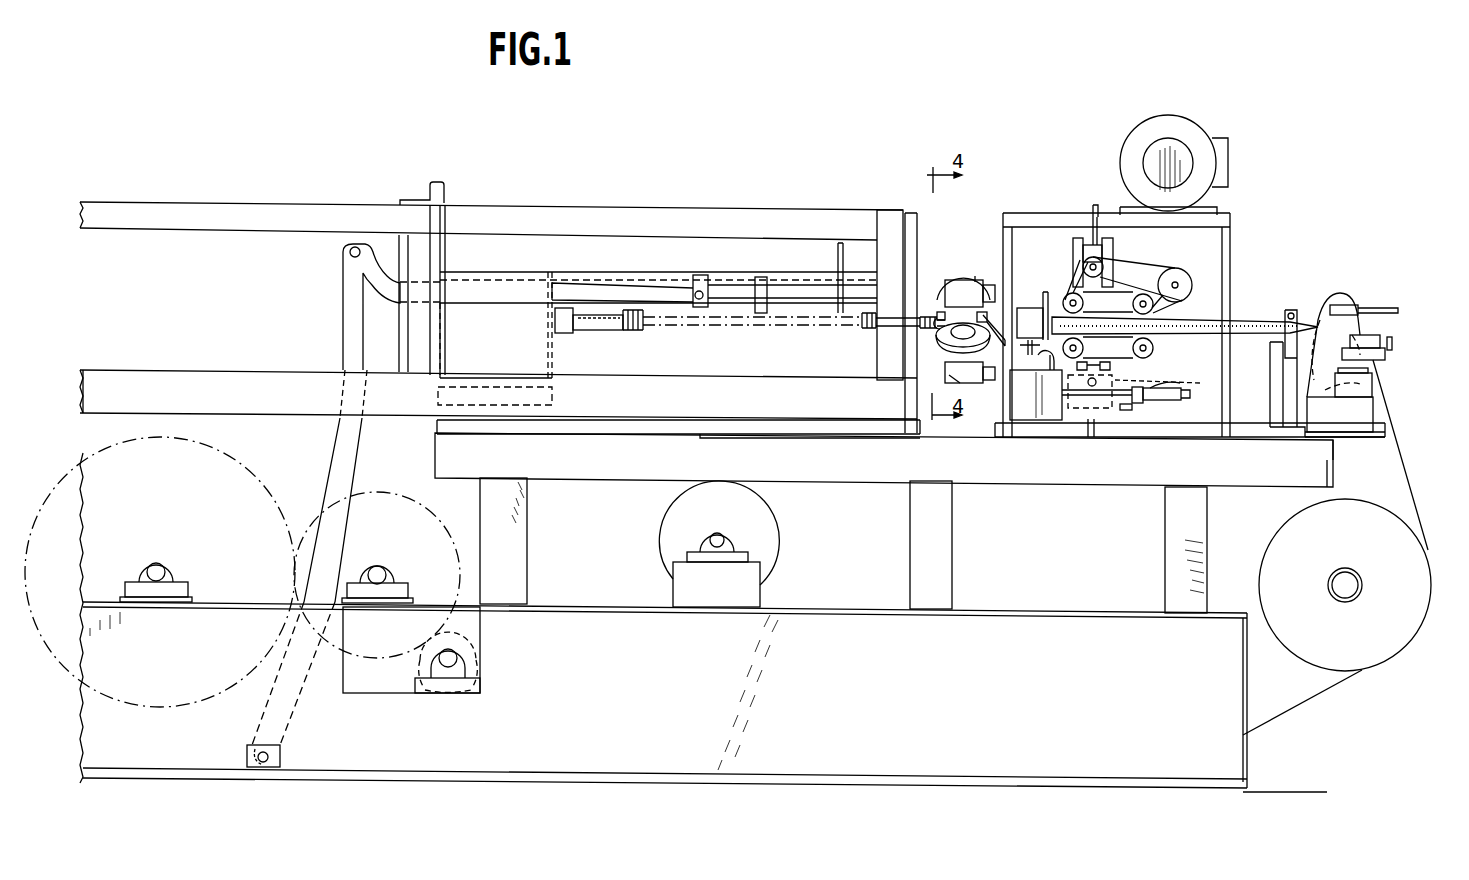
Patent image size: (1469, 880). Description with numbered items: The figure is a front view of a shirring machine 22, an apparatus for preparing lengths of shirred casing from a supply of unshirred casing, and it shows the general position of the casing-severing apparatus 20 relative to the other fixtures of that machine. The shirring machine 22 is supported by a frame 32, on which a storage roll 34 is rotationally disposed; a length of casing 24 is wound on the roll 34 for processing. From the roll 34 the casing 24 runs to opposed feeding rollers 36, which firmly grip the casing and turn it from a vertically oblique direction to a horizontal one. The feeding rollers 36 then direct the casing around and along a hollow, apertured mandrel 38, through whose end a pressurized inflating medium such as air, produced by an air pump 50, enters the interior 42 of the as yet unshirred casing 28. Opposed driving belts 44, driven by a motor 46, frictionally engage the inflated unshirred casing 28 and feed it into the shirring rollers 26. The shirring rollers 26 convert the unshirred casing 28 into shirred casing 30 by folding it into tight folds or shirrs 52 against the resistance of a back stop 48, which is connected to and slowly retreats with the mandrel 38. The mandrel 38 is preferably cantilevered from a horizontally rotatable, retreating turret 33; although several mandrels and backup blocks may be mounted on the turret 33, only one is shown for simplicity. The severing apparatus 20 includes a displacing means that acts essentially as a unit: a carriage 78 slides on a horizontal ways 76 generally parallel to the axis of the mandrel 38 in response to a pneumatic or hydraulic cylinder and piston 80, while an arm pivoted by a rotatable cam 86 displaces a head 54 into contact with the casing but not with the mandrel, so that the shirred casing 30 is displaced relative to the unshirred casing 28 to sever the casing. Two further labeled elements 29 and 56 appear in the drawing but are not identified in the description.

The apparatus for severing casing 20 is at (1016, 278).
The shirring machine 22 is at (753, 203).
The casing 24 is at (1415, 470).
The shirring rollers 26 is at (972, 287).
The unshirred casing 28 is at (1068, 297).
The jaw disc 29 is at (938, 337).
The shirred casing 30 is at (796, 327).
The frame 32 is at (525, 536).
The retreating turret 33 is at (553, 348).
The storage roll 34 is at (1373, 655).
The feeding rollers 36 is at (1362, 330).
The mandrel 38 is at (752, 325).
The interior of unshirred casing 42 is at (1233, 322).
The driving belts 44 is at (1118, 312).
The motor 46 is at (1212, 190).
The back stop 48 is at (585, 333).
The air pump 50 is at (503, 350).
The shirrs 52 is at (633, 331).
The head 54 is at (925, 332).
The blocks 56 is at (950, 375).
The horizontal ways 76 is at (1217, 403).
The carriage 78 is at (1020, 398).
The cylinder and piston 80 is at (1168, 387).
The rotatable cam 86 is at (1038, 307).